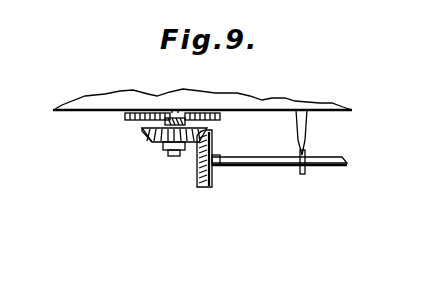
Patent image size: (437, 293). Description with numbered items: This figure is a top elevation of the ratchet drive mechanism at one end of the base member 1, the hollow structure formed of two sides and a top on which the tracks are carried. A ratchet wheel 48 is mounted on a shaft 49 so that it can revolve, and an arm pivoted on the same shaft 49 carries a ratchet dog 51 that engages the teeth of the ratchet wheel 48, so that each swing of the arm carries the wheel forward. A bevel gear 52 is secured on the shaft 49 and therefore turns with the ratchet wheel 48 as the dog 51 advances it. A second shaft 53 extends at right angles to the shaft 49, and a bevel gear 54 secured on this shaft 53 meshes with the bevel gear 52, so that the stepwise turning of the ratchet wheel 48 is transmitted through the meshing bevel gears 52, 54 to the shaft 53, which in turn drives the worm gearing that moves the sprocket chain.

The base member 1 is at (264, 103).
The ratchet wheel 48 is at (218, 121).
The shaft 49 is at (175, 156).
The ratchet dog 51 is at (150, 124).
The bevel gear 52 is at (154, 144).
The shaft 53 is at (325, 163).
The bevel gear 54 is at (215, 184).